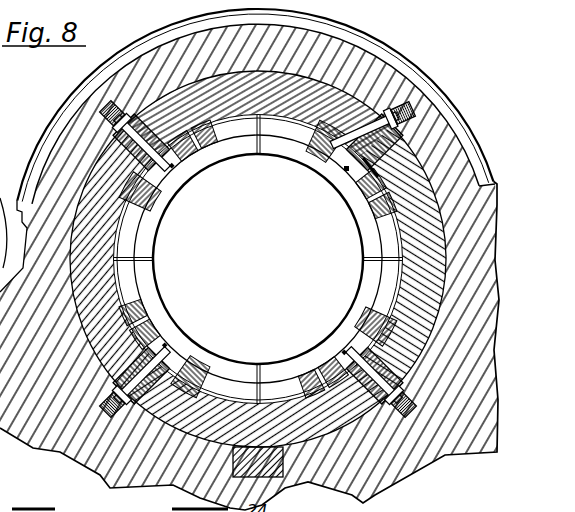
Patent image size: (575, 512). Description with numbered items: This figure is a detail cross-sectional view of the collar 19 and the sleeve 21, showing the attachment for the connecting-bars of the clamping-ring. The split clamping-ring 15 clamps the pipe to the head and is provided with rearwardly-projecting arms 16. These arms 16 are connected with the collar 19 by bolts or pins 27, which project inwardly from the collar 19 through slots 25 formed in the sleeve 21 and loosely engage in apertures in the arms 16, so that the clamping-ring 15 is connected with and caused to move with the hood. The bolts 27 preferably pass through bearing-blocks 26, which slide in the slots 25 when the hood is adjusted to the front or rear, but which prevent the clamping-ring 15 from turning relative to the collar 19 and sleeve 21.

The split clamping-ring 15 is at (340, 340).
The rearwardly-projecting arms 16 is at (197, 157).
The collar 19 is at (440, 107).
The sleeve 21 is at (100, 285).
The slots 25 is at (140, 207).
The bearing-blocks 26 is at (373, 165).
The bolts or pins 27 is at (352, 173).